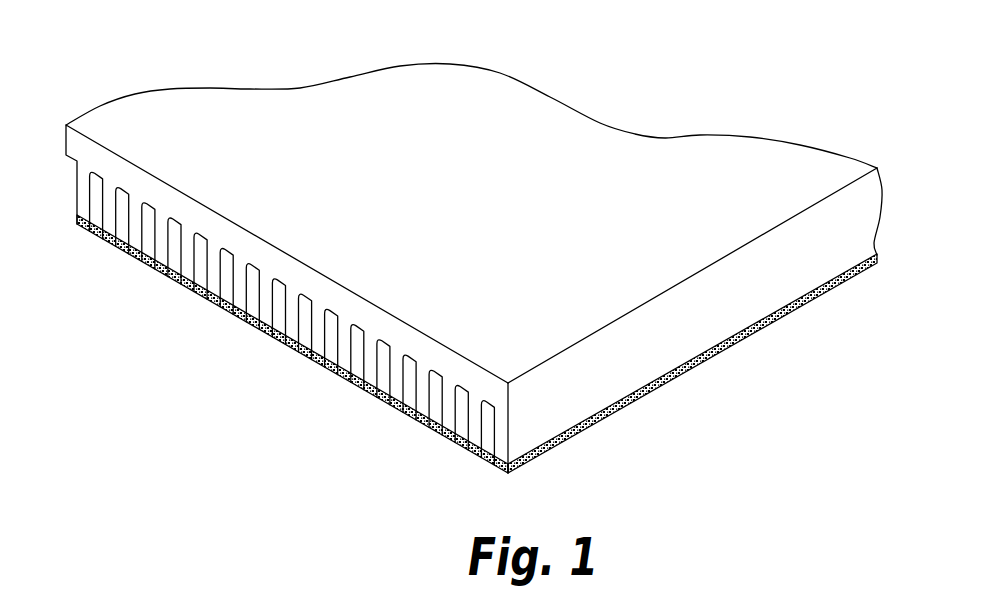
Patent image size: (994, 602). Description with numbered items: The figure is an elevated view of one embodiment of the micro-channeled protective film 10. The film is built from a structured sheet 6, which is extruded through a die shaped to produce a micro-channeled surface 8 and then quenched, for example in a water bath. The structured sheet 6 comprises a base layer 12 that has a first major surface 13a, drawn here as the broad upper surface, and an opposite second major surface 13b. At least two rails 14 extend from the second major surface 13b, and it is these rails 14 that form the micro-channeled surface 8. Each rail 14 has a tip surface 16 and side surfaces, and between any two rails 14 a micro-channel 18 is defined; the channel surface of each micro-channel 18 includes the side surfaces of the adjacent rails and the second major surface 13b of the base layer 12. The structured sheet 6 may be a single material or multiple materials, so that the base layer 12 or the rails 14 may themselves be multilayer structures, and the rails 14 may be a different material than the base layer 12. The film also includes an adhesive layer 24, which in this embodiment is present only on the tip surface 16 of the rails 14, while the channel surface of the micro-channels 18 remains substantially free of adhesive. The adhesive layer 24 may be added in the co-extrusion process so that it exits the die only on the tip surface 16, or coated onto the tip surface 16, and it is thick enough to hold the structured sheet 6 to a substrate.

The protective film 10 is at (598, 62).
The base layer 12 is at (66, 128).
The first major surface 13a is at (263, 113).
The second major surface 13b is at (252, 267).
The rails 14 is at (163, 246).
The tip surface 16 is at (263, 335).
The micro-channels 18 is at (383, 362).
The adhesive layer 24 is at (420, 423).
The structured sheet 6 is at (543, 408).
The micro-channeled surface 8 is at (198, 308).